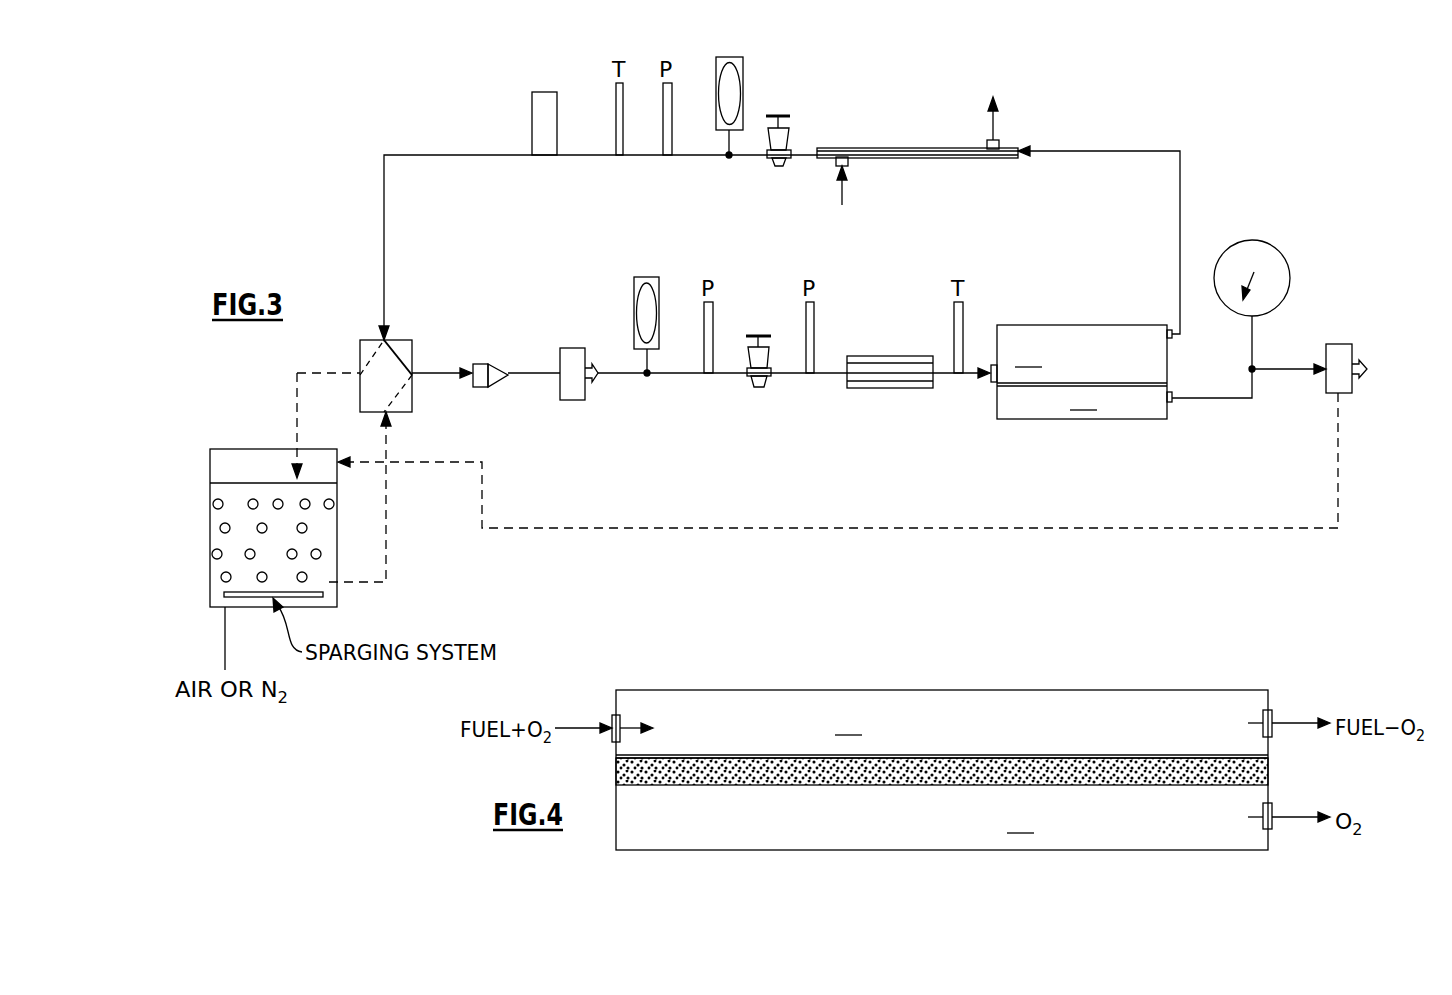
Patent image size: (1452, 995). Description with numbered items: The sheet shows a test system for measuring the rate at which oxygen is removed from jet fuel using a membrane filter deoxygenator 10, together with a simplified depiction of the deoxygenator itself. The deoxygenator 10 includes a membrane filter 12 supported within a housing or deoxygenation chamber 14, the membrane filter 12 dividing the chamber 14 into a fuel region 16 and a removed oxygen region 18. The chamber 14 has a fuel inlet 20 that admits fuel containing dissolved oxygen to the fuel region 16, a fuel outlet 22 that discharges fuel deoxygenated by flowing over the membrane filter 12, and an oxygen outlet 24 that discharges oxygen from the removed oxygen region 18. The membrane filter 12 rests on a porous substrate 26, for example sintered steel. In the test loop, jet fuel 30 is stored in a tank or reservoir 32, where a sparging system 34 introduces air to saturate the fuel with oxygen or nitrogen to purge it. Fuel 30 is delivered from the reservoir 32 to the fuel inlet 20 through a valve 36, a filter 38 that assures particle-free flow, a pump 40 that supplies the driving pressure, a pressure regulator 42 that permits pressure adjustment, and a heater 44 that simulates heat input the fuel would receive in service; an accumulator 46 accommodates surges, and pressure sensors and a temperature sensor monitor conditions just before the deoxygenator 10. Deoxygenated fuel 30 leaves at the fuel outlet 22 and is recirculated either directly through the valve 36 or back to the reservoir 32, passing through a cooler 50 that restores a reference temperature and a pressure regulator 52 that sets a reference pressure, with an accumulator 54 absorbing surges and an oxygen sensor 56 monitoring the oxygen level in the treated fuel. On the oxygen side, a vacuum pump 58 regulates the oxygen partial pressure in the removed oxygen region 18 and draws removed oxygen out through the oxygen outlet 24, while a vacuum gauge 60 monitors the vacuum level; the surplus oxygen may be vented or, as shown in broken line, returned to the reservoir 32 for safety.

In FIG. 3, the membrane filter deoxygenator 10 is at (1064, 377).
In FIG. 4, the membrane filter deoxygenator 10 is at (942, 755).
In FIG. 3, the membrane filter 12 is at (1060, 383).
In FIG. 4, the membrane filter 12 is at (942, 772).
In FIG. 3, the housing or deoxygenation chamber 14 is at (1125, 325).
In FIG. 4, the housing or deoxygenation chamber 14 is at (705, 690).
In FIG. 3, the fuel region 16 is at (1030, 357).
In FIG. 4, the fuel region 16 is at (850, 724).
In FIG. 3, the removed oxygen region 18 is at (1085, 399).
In FIG. 4, the removed oxygen region 18 is at (1022, 822).
In FIG. 3, the fuel inlet 20 is at (991, 382).
In FIG. 4, the fuel inlet 20 is at (614, 716).
In FIG. 3, the fuel outlet 22 is at (1172, 336).
In FIG. 4, the fuel outlet 22 is at (1268, 710).
In FIG. 3, the oxygen outlet 24 is at (1172, 400).
In FIG. 4, the oxygen outlet 24 is at (1272, 830).
In FIG. 4, the substrate 26 is at (806, 780).
In FIG. 3, the jet fuel 30 is at (215, 567).
In FIG. 3, the tank or reservoir 32 is at (210, 493).
In FIG. 3, the sparging system 34 is at (222, 622).
In FIG. 3, the valve 36 is at (398, 340).
In FIG. 3, the filter 38 is at (498, 385).
In FIG. 3, the pump 40 is at (578, 400).
In FIG. 3, the pressure regulator 42 is at (746, 363).
In FIG. 3, the heater 44 is at (866, 356).
In FIG. 3, the accumulator 46 is at (634, 300).
In FIG. 3, the cooler 50 is at (968, 148).
In FIG. 3, the pressure regulator 52 is at (790, 132).
In FIG. 3, the accumulator 54 is at (743, 75).
In FIG. 3, the oxygen sensor 56 is at (532, 104).
In FIG. 3, the vacuum pump 58 is at (1348, 393).
In FIG. 3, the vacuum gauge 60 is at (1275, 252).